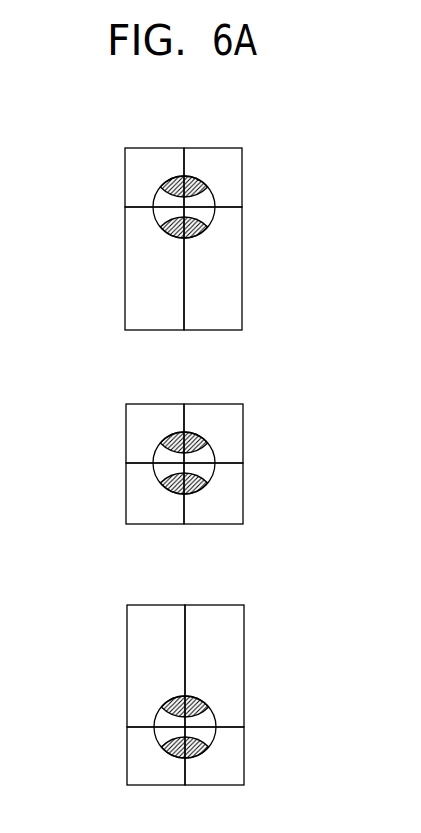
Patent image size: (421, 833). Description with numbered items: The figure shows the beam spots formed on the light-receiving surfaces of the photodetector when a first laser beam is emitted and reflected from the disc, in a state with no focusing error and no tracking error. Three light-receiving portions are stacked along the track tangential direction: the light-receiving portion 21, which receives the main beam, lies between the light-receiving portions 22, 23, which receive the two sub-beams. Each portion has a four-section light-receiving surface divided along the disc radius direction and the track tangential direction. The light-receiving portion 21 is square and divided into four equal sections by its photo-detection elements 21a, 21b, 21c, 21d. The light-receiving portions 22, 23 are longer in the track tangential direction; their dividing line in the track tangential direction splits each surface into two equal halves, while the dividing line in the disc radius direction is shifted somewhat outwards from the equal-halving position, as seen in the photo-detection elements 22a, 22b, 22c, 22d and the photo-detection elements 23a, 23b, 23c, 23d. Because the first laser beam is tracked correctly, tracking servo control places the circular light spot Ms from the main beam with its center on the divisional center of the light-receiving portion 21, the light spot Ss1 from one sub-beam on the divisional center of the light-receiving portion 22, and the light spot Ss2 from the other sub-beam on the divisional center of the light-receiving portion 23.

The light-receiving portion 22 is at (175, 239).
The photo-detection element 22a is at (132, 176).
The photo-detection element 22b is at (233, 184).
The photo-detection element 22c is at (235, 288).
The photo-detection element 22d is at (132, 277).
The light spot Ss1 is at (215, 220).
The light-receiving portion 21 is at (178, 459).
The photo-detection element 21a is at (133, 423).
The photo-detection element 21b is at (233, 412).
The photo-detection element 21c is at (240, 510).
The photo-detection element 21d is at (133, 500).
The light spot Ms is at (217, 458).
The light-receiving portion 23 is at (179, 695).
The photo-detection element 23a is at (134, 628).
The photo-detection element 23b is at (235, 633).
The photo-detection element 23c is at (238, 762).
The photo-detection element 23d is at (134, 757).
The light spot Ss2 is at (217, 716).